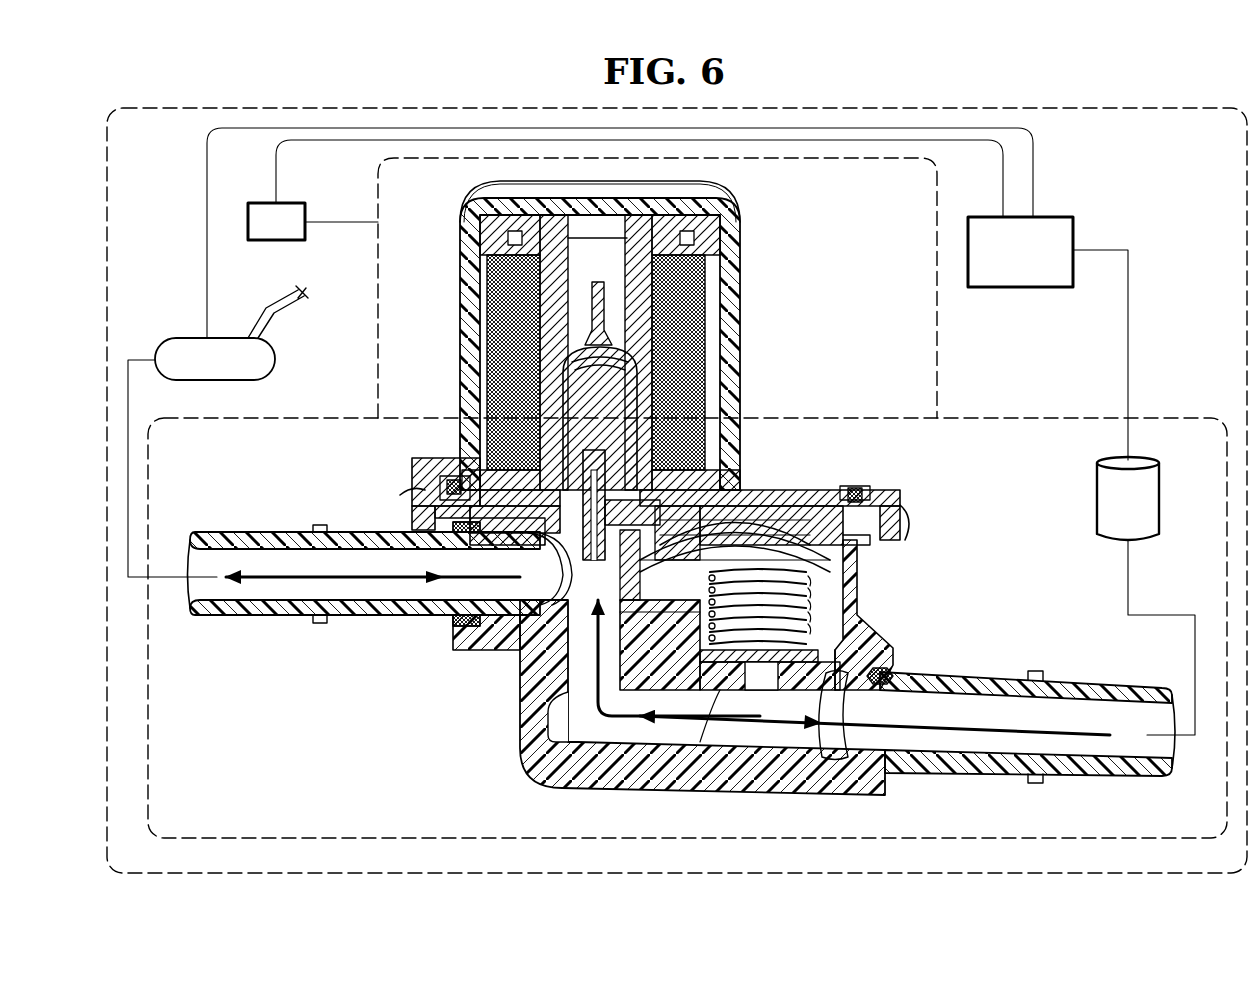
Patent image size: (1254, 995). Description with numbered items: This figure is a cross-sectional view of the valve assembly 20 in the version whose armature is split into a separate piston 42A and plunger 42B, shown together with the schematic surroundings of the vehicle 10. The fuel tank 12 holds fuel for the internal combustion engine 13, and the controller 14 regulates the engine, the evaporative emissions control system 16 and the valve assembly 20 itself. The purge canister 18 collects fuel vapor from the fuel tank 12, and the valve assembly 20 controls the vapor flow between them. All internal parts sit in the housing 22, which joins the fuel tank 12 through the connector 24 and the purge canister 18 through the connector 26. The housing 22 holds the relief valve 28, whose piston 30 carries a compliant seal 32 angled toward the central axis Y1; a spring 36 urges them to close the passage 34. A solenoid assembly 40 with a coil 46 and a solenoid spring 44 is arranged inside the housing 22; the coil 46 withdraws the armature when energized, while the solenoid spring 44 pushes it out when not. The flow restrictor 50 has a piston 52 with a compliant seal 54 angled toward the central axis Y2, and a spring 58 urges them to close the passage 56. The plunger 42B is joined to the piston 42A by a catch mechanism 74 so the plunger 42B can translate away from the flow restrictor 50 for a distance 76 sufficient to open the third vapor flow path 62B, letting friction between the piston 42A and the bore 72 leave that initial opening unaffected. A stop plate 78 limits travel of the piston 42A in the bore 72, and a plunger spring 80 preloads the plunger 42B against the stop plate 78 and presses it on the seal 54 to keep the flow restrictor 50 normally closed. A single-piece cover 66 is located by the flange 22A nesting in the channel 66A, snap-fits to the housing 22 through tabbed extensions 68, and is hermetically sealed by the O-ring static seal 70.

The vehicle 10 is at (1042, 100).
The fuel tank 12 is at (280, 360).
The internal combustion engine 13 is at (1073, 232).
The controller 14 is at (262, 203).
The evaporative emissions control system 16 is at (980, 410).
The purge canister 18 is at (1097, 494).
The valve assembly 20 is at (452, 337).
The housing 22 is at (856, 614).
The flange 22A is at (418, 478).
The connector 24 is at (268, 616).
The connector 26 is at (1072, 672).
The relief valve 28 is at (702, 486).
The piston 30 is at (858, 592).
The compliant seal 32 is at (852, 572).
The passage 34 is at (762, 522).
The spring 36 is at (846, 642).
The solenoid assembly 40 is at (722, 300).
The piston 42A is at (727, 402).
The plunger 42B is at (622, 392).
The solenoid spring 44 is at (732, 352).
The coil 46 is at (726, 346).
The flow restrictor 50 is at (572, 602).
The piston 52 is at (542, 556).
The compliant seal 54 is at (518, 570).
The passage 56 is at (470, 520).
The spring 58 is at (632, 620).
The arrow 62B is at (702, 790).
The cover 66 is at (690, 206).
The channel 66A is at (446, 478).
The tabbed extensions 68 is at (400, 495).
The static seal 70 is at (453, 480).
The bore 72 is at (736, 366).
The catch mechanism 74 is at (718, 442).
The distance 76 is at (616, 592).
The stop plate 78 is at (468, 470).
The plunger spring 80 is at (436, 508).
The central axis Y1 is at (745, 696).
The central axis Y2 is at (598, 712).